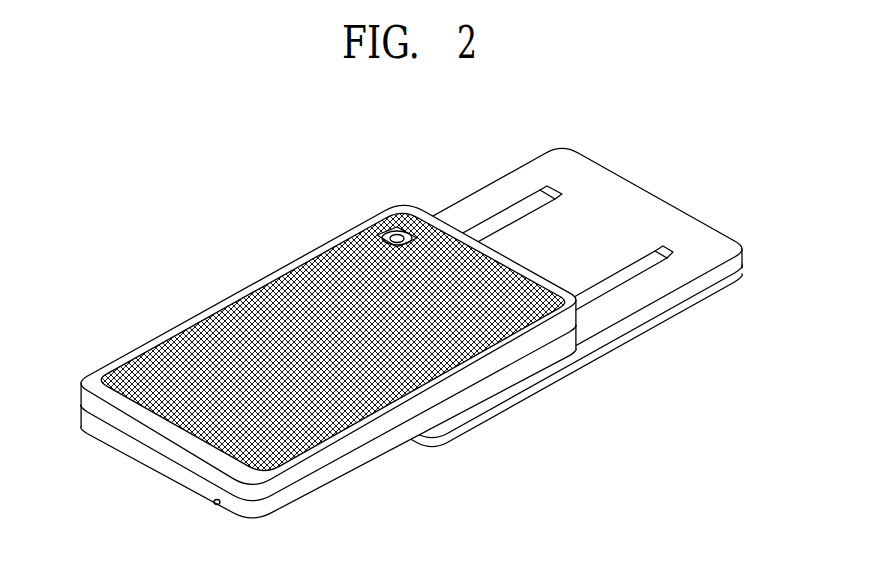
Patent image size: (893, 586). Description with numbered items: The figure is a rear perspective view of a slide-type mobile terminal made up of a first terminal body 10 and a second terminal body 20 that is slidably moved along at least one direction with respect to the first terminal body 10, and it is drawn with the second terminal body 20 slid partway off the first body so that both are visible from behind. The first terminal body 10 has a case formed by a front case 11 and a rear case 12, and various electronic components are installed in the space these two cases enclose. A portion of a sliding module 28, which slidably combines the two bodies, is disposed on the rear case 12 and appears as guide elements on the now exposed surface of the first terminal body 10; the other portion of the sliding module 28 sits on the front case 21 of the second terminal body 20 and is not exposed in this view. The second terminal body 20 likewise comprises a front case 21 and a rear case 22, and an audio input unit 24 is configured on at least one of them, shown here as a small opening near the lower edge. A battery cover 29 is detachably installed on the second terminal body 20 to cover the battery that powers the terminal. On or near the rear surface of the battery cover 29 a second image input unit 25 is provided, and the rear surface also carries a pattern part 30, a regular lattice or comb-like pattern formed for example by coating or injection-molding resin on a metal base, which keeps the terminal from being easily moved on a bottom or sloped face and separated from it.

The first terminal body 10 is at (496, 284).
The front case 11 is at (617, 342).
The rear case 12 is at (675, 297).
The sliding module 28 is at (497, 233).
The second terminal body 20 is at (320, 358).
The front case 21 is at (112, 442).
The rear case 22 is at (155, 452).
The battery cover 29 is at (200, 458).
The audio input unit 24 is at (213, 504).
The second image input unit 25 is at (390, 232).
The pattern part 30 is at (177, 337).